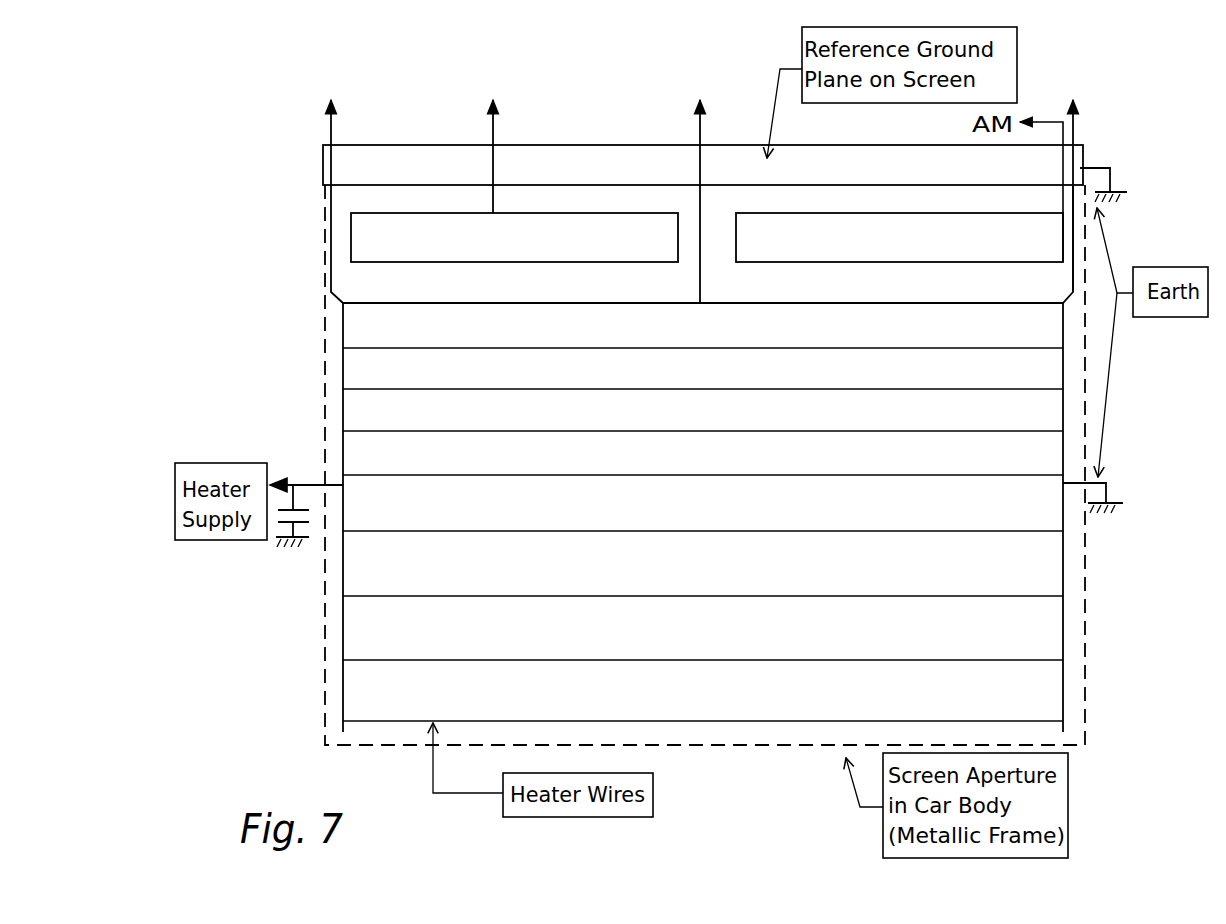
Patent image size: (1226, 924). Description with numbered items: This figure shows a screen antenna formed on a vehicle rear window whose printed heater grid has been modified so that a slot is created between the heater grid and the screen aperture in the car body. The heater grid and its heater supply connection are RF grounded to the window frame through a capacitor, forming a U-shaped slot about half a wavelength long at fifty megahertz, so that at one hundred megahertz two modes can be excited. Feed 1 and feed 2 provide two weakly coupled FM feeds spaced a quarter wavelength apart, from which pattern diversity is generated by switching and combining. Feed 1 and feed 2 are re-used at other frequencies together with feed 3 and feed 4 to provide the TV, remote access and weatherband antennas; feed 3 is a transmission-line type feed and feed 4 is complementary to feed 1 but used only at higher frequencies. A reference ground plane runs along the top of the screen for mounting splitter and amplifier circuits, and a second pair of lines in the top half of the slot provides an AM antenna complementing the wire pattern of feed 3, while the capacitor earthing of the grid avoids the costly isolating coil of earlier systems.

The feed 1 is at (1074, 181).
The feed 2 is at (700, 186).
The feed 3 is at (493, 143).
The feed 4 is at (332, 129).